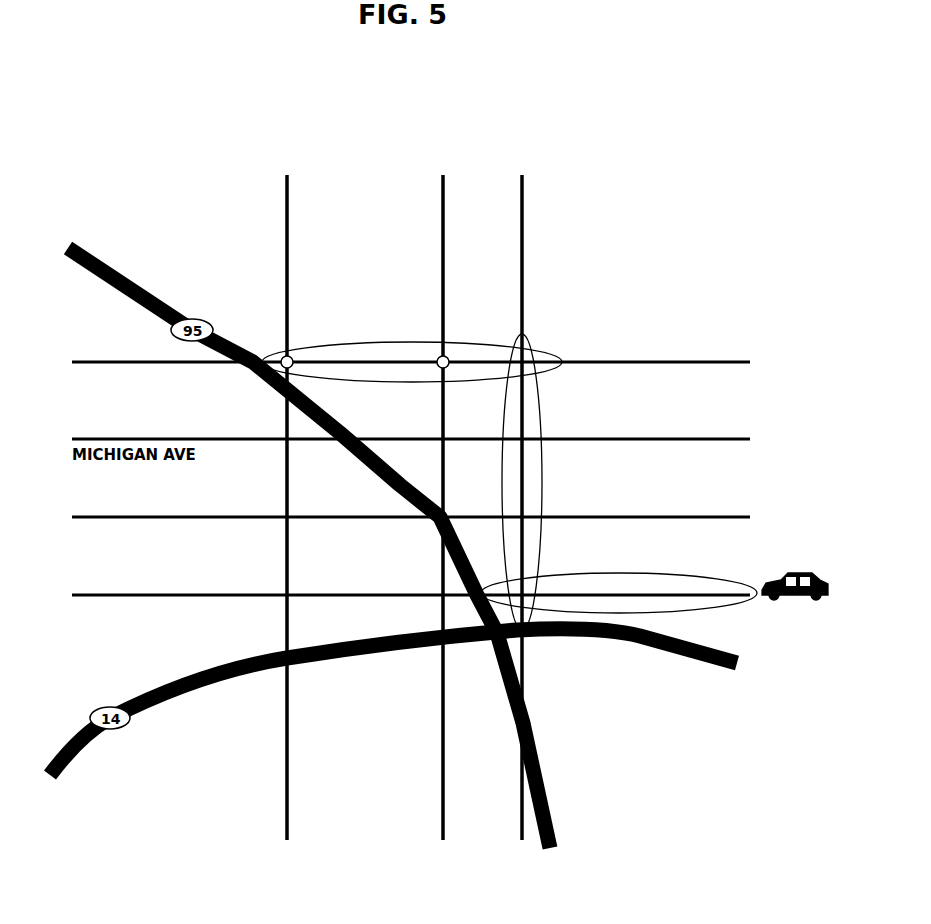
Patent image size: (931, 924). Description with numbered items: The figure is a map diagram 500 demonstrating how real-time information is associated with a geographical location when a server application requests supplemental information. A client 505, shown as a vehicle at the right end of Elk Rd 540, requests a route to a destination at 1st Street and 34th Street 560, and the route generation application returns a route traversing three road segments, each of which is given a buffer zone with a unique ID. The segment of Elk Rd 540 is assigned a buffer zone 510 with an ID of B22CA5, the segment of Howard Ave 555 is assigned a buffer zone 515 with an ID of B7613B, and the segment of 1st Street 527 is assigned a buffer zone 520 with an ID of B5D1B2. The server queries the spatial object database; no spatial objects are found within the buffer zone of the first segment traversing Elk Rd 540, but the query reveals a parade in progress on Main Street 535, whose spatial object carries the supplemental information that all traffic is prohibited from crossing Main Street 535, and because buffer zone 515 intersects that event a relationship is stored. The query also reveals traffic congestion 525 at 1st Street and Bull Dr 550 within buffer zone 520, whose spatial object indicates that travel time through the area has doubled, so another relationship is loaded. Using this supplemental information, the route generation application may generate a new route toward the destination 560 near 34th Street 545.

The map diagram 500 is at (677, 85).
The client 505 is at (793, 572).
The buffer zone 510 is at (627, 573).
The buffer zone 515 is at (545, 477).
The buffer zone 520 is at (392, 342).
The traffic congestion 525 is at (464, 331).
The 1st Street 527 is at (82, 361).
The Main Street 535 is at (82, 516).
The Elk Rd 540 is at (82, 594).
The 34th Street 545 is at (277, 486).
The Bull Dr 550 is at (433, 486).
The Howard Ave 555 is at (511, 486).
The destination at 1st Street and 34th Street 560 is at (270, 334).